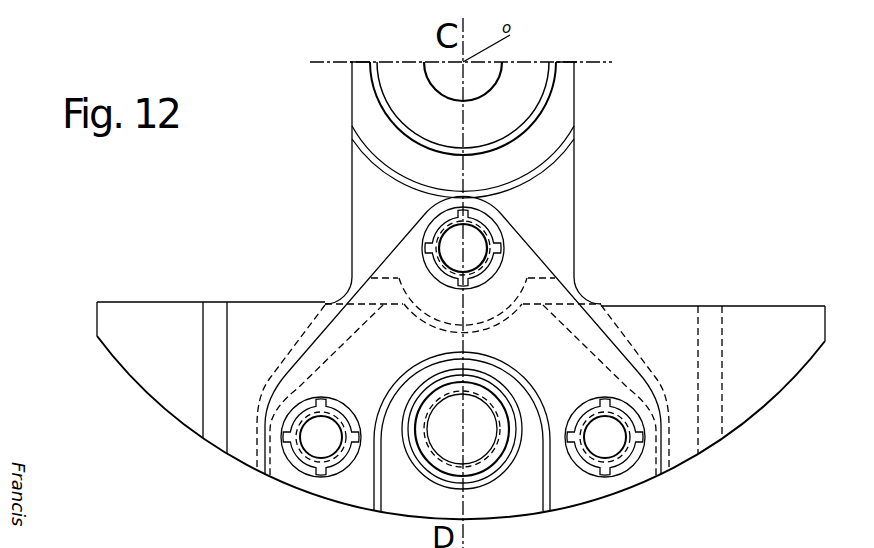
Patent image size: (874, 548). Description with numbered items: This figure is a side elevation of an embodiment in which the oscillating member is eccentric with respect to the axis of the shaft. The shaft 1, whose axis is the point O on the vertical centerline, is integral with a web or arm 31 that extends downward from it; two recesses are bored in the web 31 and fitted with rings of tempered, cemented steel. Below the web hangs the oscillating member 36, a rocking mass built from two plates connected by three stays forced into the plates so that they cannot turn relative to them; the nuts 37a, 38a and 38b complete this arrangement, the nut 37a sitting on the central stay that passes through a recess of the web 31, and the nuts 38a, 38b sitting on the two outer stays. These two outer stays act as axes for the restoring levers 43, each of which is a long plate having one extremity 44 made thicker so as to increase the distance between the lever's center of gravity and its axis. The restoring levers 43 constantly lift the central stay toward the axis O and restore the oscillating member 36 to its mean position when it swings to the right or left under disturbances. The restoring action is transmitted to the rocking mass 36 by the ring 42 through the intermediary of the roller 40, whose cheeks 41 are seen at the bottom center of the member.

The shaft 1 is at (512, 100).
The web or arm 31 is at (533, 198).
The oscillating member 36 is at (547, 343).
The nut 37a is at (490, 248).
The nut 38a is at (323, 440).
The nut 38b is at (345, 546).
The roller 40 is at (468, 437).
The cheeks 41 is at (443, 463).
The ring 42 is at (477, 493).
The restoring levers 43 is at (317, 386).
The thicker extremity 44 is at (737, 362).